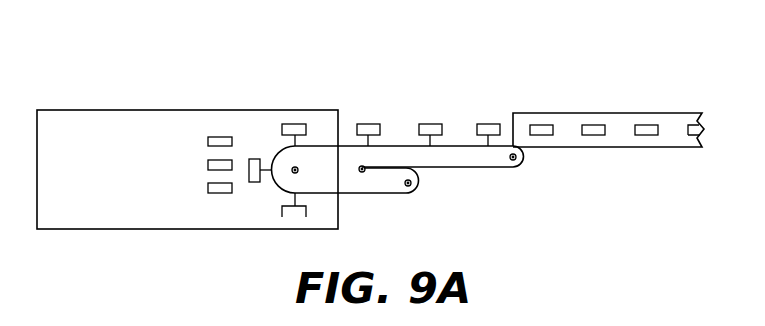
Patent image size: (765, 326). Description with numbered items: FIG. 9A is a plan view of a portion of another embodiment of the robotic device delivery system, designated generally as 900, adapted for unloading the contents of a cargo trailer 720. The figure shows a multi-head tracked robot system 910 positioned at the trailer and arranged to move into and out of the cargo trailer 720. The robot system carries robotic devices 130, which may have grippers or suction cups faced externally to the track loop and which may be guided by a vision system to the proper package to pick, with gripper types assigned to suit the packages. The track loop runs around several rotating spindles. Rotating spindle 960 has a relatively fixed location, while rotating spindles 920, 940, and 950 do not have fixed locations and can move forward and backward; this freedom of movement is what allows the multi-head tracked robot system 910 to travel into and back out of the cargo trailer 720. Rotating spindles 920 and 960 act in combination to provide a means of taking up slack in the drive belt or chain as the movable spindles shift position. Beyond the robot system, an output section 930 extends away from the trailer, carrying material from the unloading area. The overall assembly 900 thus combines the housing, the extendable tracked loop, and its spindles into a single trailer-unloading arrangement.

The conveyor system 900 is at (643, 63).
The cargo trailer 720 is at (104, 121).
The rotating spindle 940 is at (298, 169).
The robotic devices 130 is at (280, 209).
The multi-head tracked robot system 910 is at (464, 168).
The rotating spindle 950 is at (514, 160).
The rotating spindle 960 is at (363, 172).
The rotating spindle 920 is at (409, 186).
The output conveyor strip 930 is at (565, 122).